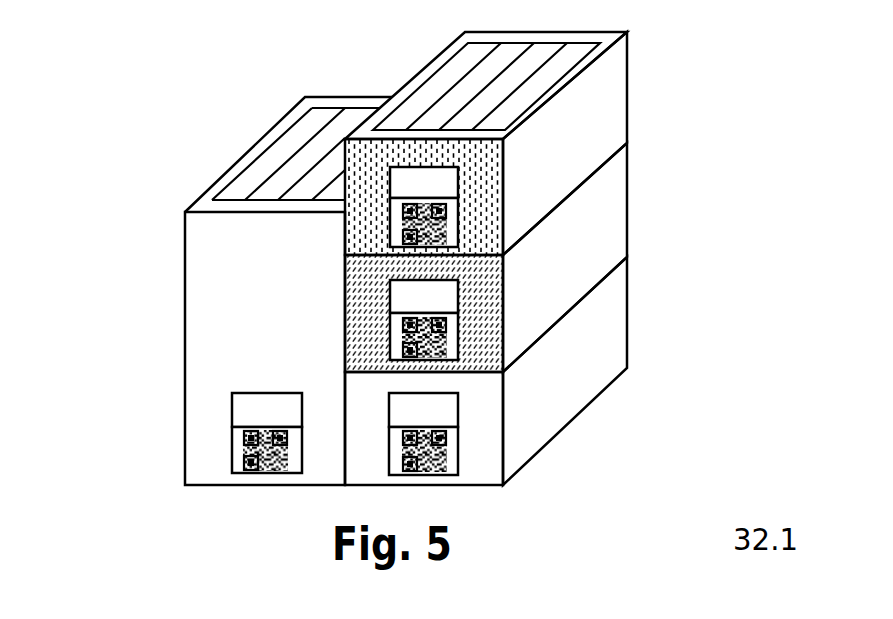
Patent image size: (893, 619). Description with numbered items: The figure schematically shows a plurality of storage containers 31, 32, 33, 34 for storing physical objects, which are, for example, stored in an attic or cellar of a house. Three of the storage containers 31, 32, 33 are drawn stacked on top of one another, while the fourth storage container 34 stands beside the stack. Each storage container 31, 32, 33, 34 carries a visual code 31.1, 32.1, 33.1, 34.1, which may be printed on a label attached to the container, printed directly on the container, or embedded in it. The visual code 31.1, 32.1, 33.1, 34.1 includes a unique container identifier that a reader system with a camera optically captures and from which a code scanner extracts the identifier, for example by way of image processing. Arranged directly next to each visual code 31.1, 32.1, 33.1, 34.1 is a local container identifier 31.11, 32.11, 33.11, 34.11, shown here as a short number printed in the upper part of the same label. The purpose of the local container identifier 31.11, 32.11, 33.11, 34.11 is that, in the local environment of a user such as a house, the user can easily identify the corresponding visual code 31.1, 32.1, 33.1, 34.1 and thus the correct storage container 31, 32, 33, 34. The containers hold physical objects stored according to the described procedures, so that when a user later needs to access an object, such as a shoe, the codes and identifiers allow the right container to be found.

The storage container 31 is at (617, 352).
The visual code 31.1 is at (450, 455).
The local container identifier 31.11 is at (458, 410).
The storage container 32 is at (617, 238).
The visual code 32.1 is at (452, 338).
The local container identifier 32.11 is at (458, 293).
The storage container 33 is at (617, 125).
The visual code 33.1 is at (450, 227).
The local container identifier 33.11 is at (458, 180).
The storage container 34 is at (210, 345).
The visual code 34.1 is at (235, 450).
The local container identifier 34.11 is at (232, 410).